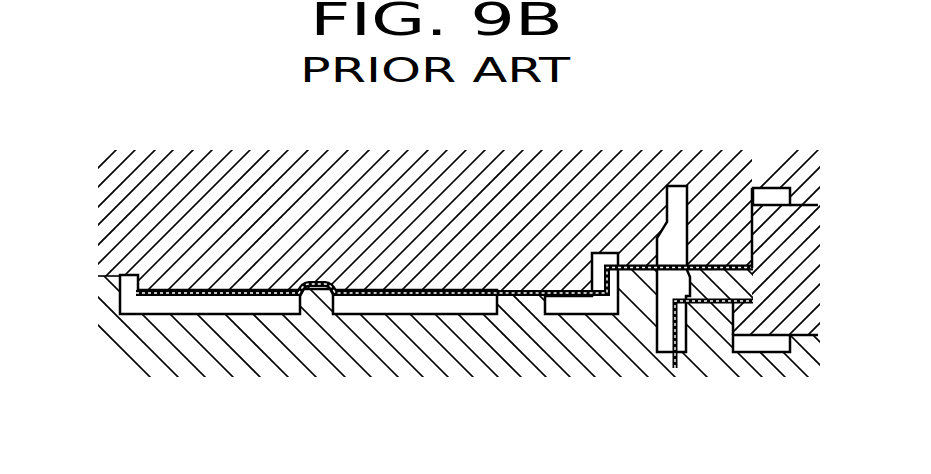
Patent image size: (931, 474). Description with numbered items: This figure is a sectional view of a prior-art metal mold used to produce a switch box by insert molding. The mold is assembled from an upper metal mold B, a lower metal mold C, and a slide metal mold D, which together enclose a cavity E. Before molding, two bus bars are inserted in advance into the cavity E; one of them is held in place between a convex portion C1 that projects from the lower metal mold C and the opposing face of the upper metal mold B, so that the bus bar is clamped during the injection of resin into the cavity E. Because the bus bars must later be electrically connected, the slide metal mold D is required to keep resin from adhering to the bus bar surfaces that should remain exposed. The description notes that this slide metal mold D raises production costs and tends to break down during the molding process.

The upper metal mold B is at (480, 183).
The lower metal mold C is at (523, 385).
The convex portion C1 is at (512, 308).
The cavity E is at (680, 213).
The slide metal mold D is at (795, 253).